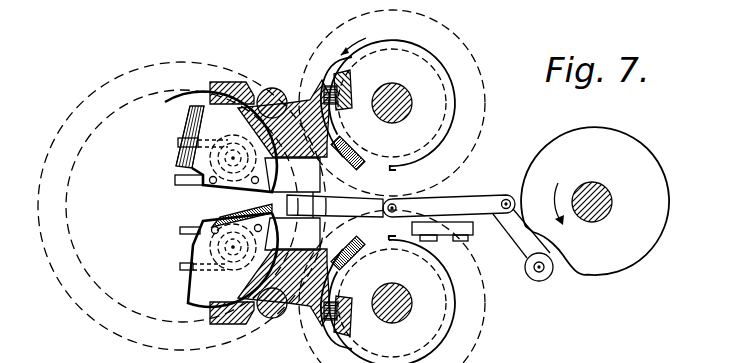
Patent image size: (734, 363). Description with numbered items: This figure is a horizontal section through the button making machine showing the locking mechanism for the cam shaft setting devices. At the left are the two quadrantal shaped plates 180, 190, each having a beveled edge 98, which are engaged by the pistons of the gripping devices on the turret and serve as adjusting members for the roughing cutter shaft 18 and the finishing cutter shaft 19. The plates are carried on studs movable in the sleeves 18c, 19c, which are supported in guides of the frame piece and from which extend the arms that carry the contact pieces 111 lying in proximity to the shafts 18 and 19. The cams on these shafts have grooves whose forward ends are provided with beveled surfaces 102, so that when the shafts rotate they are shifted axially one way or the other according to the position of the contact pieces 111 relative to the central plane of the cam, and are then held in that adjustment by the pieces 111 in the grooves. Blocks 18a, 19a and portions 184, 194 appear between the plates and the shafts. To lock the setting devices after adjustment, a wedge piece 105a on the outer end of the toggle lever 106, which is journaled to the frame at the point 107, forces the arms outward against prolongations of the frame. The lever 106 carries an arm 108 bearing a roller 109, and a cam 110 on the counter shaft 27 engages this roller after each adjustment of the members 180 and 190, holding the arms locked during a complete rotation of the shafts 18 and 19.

The shaft 18 is at (393, 90).
The shaft 19 is at (405, 294).
The upper roller bearing block 18a is at (292, 175).
The lower roller bearing block 19a is at (292, 234).
The sleeve 18c is at (452, 124).
The sleeve 19c is at (443, 318).
The counter shaft 27 is at (600, 208).
The beveled edges 98 is at (197, 124).
The beveled surfaces 102 is at (327, 76).
The wedge piece 105a is at (386, 208).
The toggle lever 106 is at (447, 207).
The pivot point 107 is at (504, 200).
The arm 108 is at (510, 254).
The roller 109 is at (541, 282).
The cam 110 is at (595, 201).
The contact pieces 111 is at (352, 151).
The quadrantal plate 180 is at (210, 186).
The upper follower arm 184 is at (270, 118).
The quadrantal plate 190 is at (229, 260).
The lower follower arm 194 is at (270, 287).